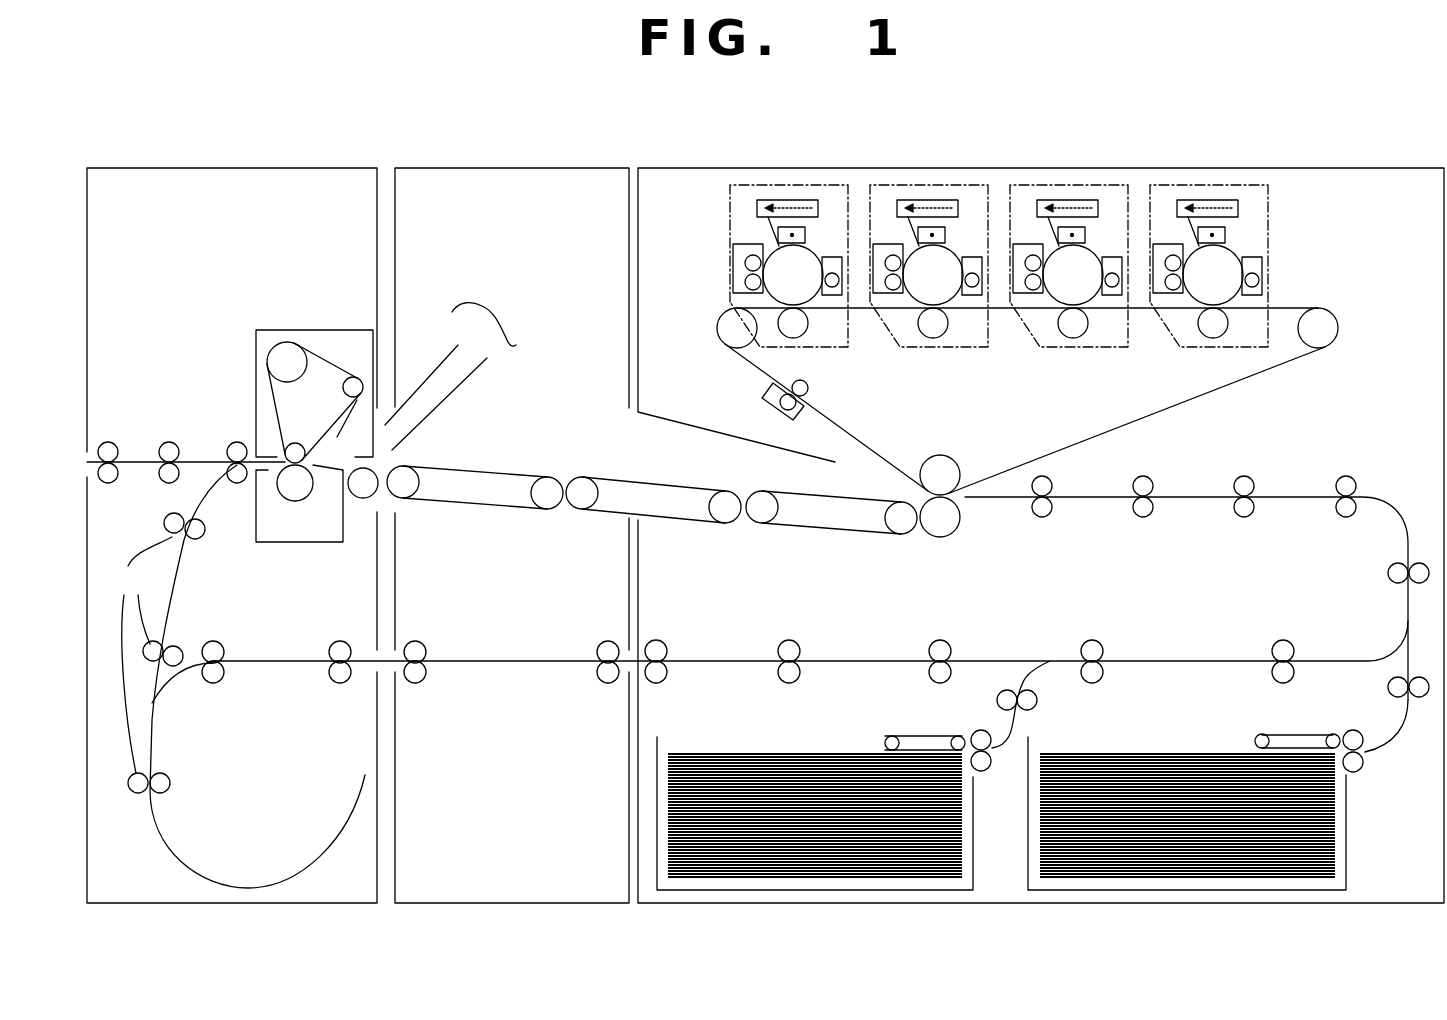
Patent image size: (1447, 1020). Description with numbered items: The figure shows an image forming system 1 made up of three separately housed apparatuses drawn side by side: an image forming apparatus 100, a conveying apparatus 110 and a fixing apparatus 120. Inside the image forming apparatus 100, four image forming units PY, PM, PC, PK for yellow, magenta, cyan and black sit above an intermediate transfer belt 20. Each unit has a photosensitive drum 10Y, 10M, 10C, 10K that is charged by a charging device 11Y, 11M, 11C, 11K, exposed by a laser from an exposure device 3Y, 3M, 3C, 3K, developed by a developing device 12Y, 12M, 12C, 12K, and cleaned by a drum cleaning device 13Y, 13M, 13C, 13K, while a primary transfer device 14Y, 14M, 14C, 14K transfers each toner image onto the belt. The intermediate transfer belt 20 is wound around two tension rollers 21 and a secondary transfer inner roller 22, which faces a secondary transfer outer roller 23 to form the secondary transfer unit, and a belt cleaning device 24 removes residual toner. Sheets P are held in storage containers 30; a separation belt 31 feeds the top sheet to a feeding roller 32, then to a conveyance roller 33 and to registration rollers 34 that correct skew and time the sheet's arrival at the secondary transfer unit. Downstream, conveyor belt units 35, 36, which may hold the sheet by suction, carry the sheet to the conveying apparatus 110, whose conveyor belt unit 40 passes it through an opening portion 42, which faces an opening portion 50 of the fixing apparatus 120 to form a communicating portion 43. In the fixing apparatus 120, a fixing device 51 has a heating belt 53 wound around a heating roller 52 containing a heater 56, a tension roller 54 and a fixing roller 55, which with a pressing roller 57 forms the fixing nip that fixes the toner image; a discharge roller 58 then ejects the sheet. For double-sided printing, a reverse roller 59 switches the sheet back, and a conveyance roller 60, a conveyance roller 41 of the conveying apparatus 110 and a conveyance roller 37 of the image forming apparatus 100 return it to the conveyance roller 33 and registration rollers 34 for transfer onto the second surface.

The image forming system 1 is at (1444, 105).
The image forming apparatus 100 is at (1318, 168).
The conveying apparatus 110 is at (450, 168).
The fixing apparatus 120 is at (258, 168).
The image forming unit PY is at (750, 185).
The image forming unit PM is at (929, 233).
The image forming unit PC is at (1069, 233).
The image forming unit PK is at (1209, 233).
The exposure device 3Y is at (800, 200).
The exposure device 3M is at (938, 191).
The exposure device 3C is at (1076, 191).
The exposure device 3K is at (1217, 191).
The photosensitive drum 10Y is at (818, 258).
The photosensitive drum 10M is at (961, 264).
The photosensitive drum 10C is at (1098, 264).
The photosensitive drum 10K is at (1239, 264).
The charging device 11Y is at (806, 235).
The charging device 11M is at (967, 223).
The charging device 11C is at (1105, 223).
The charging device 11K is at (1246, 223).
The developing device 12Y is at (735, 262).
The developing device 12M is at (880, 329).
The developing device 12C is at (1015, 309).
The developing device 12K is at (1153, 311).
The drum cleaning device 13Y is at (833, 292).
The drum cleaning device 13M is at (980, 301).
The drum cleaning device 13C is at (1120, 301).
The drum cleaning device 13K is at (1260, 301).
The primary transfer device 14Y is at (806, 335).
The primary transfer device 14M is at (920, 347).
The primary transfer device 14C is at (1063, 349).
The primary transfer device 14K is at (1205, 347).
The intermediate transfer belt 20 is at (1265, 369).
The tension roller 21 is at (723, 318).
The secondary transfer inner roller 22 is at (938, 455).
The secondary transfer outer roller 23 is at (938, 537).
The belt cleaning device 24 is at (765, 398).
The storage container 30 is at (1348, 828).
The separation belt 31 is at (1293, 735).
The feeding roller 32 is at (1413, 697).
The conveyance roller 33 is at (1388, 576).
The registration rollers 34 is at (1052, 512).
The conveyor belt unit 35 is at (843, 497).
The conveyor belt unit 36 is at (650, 484).
The conveyance roller 37 is at (657, 641).
The conveyor belt unit 40 is at (466, 471).
The conveyance roller 41 is at (608, 640).
The opening portion 42 is at (449, 392).
The communicating portion 43 is at (484, 312).
The opening portion 50 is at (429, 371).
The fixing device 51 is at (313, 330).
The heating roller 52 is at (283, 352).
The heating belt 53 is at (343, 355).
The tension roller 54 is at (359, 422).
The fixing roller 55 is at (300, 443).
The heater 56 is at (275, 362).
The pressing roller 57 is at (298, 500).
The discharge roller 58 is at (237, 442).
The reverse roller 59 is at (157, 653).
The conveyance roller 60 is at (340, 640).
The sheet P is at (1140, 752).